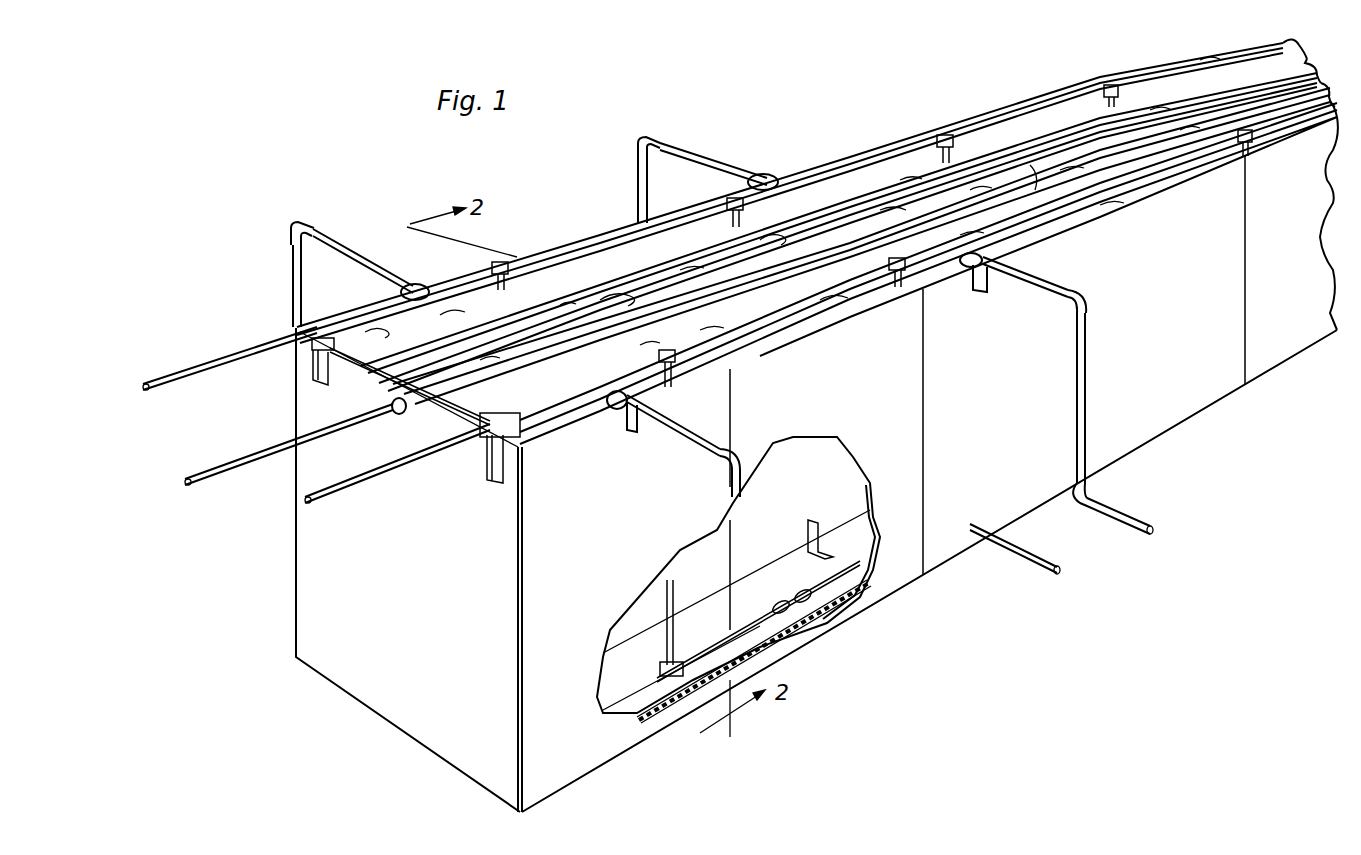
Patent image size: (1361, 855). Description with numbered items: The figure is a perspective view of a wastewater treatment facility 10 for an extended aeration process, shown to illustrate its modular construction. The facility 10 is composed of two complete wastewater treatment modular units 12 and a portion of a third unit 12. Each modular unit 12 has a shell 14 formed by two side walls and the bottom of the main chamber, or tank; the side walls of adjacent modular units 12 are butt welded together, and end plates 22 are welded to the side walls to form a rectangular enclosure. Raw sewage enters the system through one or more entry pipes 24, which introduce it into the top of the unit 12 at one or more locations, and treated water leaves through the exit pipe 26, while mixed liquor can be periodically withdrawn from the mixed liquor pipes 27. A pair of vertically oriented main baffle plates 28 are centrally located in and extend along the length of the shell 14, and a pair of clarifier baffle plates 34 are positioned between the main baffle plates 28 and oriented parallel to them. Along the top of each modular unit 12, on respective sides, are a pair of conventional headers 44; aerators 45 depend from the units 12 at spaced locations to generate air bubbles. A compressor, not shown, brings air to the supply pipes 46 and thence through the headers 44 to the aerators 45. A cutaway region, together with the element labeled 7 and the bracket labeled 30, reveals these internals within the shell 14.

The gap between strongbacks 7 is at (1030, 165).
The water treatment facility 10 is at (812, 145).
The wastewater treatment modular unit 12 is at (1303, 298).
The shell 14 is at (545, 525).
The end plate 22 is at (438, 722).
The entry pipe 24 is at (367, 267).
The exit pipe 26 is at (367, 417).
The mixed liquor pipe 27 is at (1020, 550).
The main baffle plate 28 is at (853, 287).
The anchor bracket 30 is at (808, 532).
The clarifier baffle plate 34 is at (1007, 153).
The header 44 is at (563, 257).
The aerator 45 is at (757, 622).
The supply pipe 46 is at (503, 290).